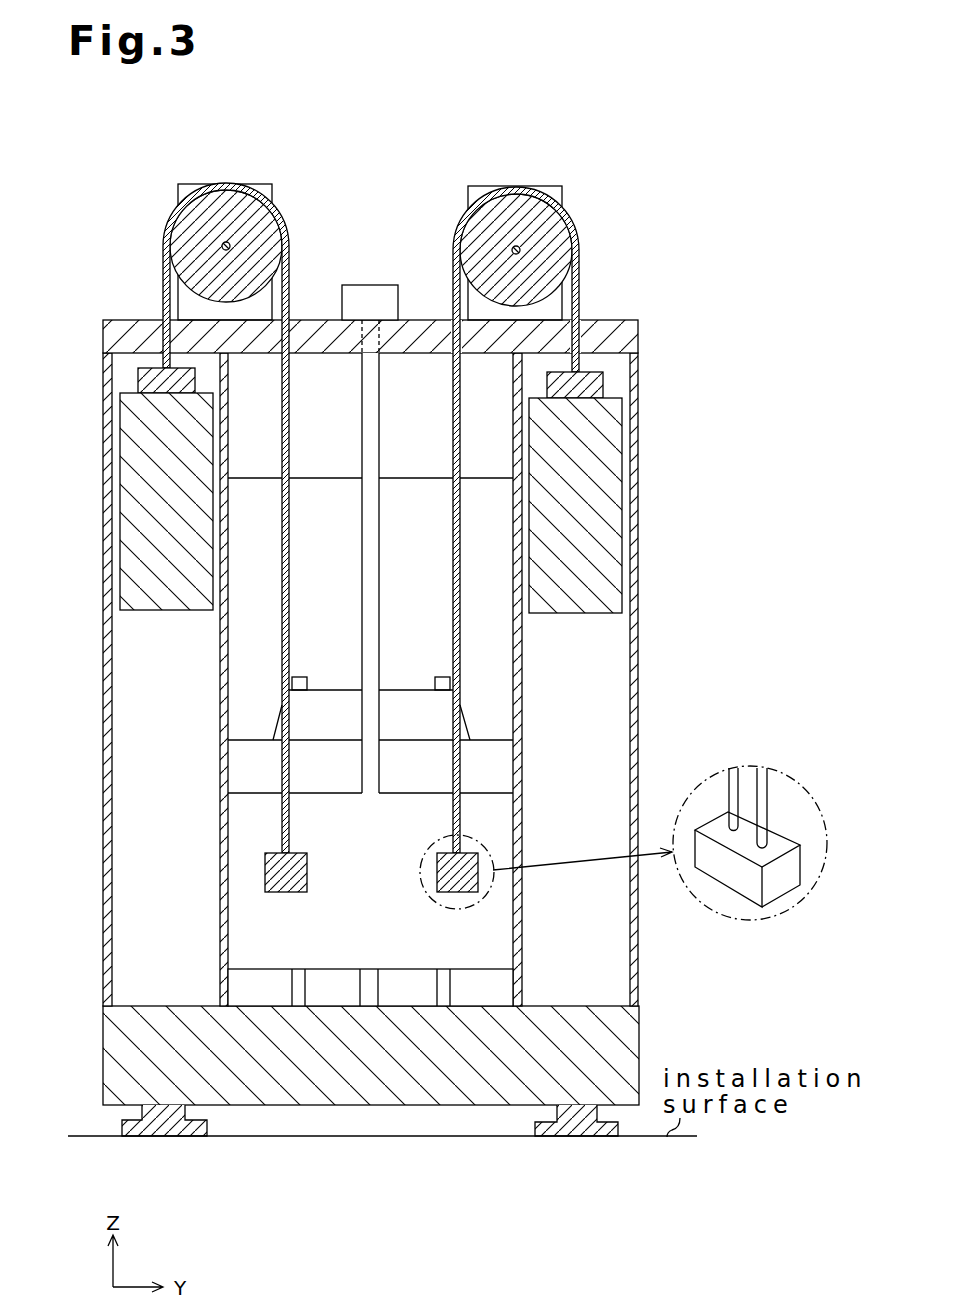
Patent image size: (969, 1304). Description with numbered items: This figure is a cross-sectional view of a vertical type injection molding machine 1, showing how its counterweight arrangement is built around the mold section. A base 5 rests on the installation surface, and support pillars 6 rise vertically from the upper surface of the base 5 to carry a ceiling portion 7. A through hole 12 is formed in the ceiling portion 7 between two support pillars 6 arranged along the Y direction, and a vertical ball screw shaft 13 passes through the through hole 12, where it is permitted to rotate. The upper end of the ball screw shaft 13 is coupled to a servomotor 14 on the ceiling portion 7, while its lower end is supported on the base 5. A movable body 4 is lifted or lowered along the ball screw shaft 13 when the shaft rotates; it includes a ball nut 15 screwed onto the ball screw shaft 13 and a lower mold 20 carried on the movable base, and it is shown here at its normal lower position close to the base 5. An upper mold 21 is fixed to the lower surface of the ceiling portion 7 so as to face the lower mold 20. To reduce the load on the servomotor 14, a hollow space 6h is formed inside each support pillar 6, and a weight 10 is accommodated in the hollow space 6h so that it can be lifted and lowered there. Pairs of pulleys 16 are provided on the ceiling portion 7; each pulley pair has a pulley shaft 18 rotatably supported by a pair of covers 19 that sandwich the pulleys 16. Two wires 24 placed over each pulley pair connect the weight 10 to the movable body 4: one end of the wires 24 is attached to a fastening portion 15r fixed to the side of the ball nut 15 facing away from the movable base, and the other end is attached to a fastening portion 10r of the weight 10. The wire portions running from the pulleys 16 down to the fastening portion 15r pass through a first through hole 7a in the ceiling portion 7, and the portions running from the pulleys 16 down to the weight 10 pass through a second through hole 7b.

The vertical type injection molding machine 1 is at (690, 152).
The movable body 4 is at (492, 731).
The base 5 is at (628, 1048).
The support pillar 6 is at (634, 580).
The hollow space 6h is at (630, 736).
The ceiling portion 7 is at (628, 337).
The first through hole 7a is at (452, 320).
The second through hole 7b is at (580, 318).
The weight 10 is at (614, 493).
The fastening portion 10r is at (604, 383).
The through hole 12 is at (367, 337).
The ball screw shaft 13 is at (378, 413).
The servomotor 14 is at (368, 292).
The ball nut 15 is at (403, 960).
The fastening portion 15r is at (453, 893).
The pulley 16 is at (517, 200).
The pulley shaft 18 is at (510, 249).
The cover 19 is at (557, 193).
The lower mold 20 is at (255, 755).
The upper mold 21 is at (255, 463).
The wire 24 is at (580, 242).